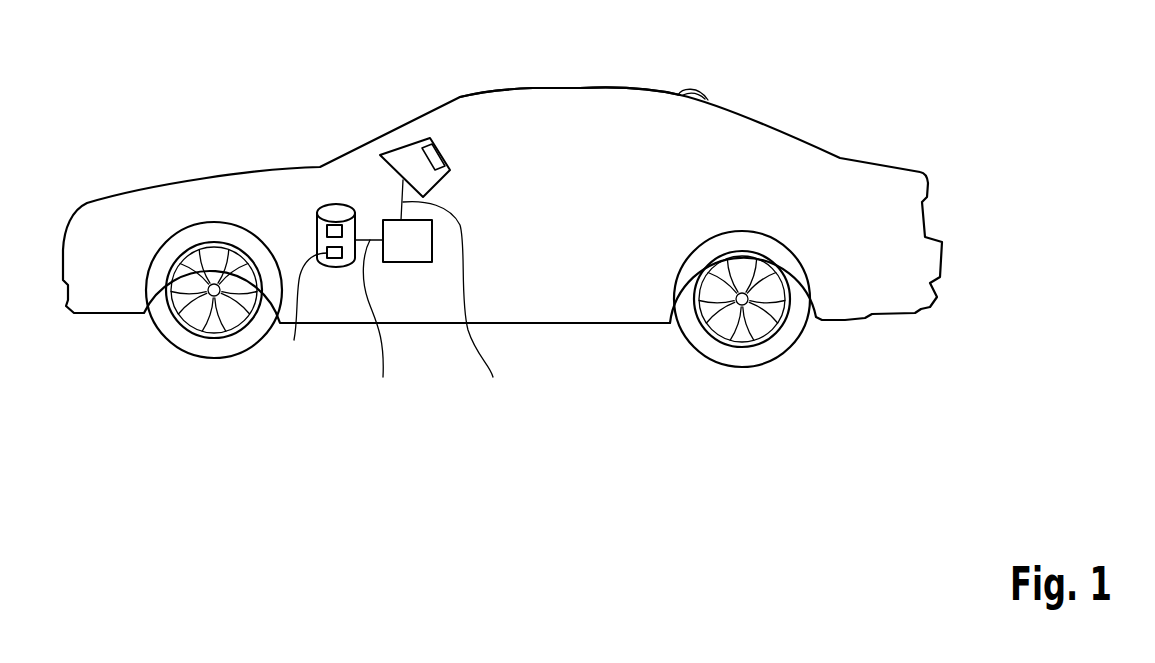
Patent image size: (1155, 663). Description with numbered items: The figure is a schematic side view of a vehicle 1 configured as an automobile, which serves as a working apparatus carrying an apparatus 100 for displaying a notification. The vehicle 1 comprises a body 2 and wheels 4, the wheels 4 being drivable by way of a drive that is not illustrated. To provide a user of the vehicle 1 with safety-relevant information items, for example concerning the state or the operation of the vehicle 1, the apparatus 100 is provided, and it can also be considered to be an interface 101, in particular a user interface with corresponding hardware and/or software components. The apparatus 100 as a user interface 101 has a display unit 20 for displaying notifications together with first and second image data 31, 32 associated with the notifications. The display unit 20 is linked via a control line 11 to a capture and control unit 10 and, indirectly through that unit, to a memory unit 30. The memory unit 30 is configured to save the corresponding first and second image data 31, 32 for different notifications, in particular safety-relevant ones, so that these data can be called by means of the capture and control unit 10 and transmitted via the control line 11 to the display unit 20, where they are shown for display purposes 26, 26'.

The vehicle 1 is at (798, 122).
The body 2 is at (633, 88).
The wheels 4 is at (163, 330).
The capture and control unit 10 is at (407, 262).
The control line 11 is at (438, 307).
The display unit 20 is at (410, 140).
The display 26 is at (476, 97).
The display 26' is at (476, 97).
The memory unit 30 is at (333, 269).
The first image data 31 is at (327, 231).
The second image data 32 is at (294, 340).
The apparatus 100 is at (316, 131).
The interface 101 is at (352, 188).